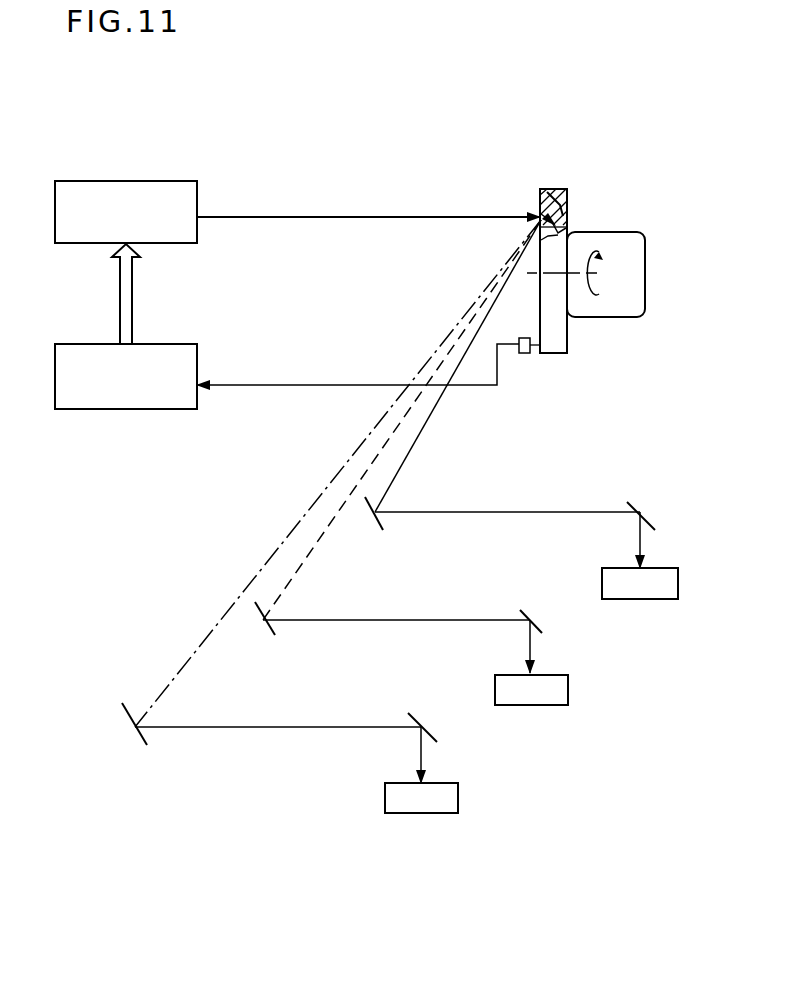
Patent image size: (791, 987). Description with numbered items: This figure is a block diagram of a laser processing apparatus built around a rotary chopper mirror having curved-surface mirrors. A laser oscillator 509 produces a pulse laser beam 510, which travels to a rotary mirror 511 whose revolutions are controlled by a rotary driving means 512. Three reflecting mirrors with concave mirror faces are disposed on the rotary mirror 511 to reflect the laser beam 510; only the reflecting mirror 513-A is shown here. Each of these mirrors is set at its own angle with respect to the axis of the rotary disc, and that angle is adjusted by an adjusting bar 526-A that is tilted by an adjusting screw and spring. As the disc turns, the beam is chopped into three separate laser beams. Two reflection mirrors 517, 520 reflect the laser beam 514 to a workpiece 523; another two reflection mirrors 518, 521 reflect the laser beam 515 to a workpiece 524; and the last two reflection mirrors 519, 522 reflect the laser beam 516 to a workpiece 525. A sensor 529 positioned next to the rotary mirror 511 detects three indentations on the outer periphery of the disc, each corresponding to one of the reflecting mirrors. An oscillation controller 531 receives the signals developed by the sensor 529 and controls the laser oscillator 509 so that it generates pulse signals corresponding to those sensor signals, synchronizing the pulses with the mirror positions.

The laser oscillator 509 is at (157, 182).
The pulse laser beam 510 is at (338, 215).
The rotary mirror 511 is at (568, 194).
The rotary driving means 512 is at (618, 242).
The reflecting mirror 513-A is at (540, 215).
The laser beam 514 is at (432, 413).
The laser beam 515 is at (398, 433).
The laser beam 516 is at (360, 447).
The reflection mirror 517 is at (376, 530).
The reflection mirror 518 is at (264, 637).
The reflection mirror 519 is at (128, 745).
The reflection mirror 520 is at (635, 505).
The reflection mirror 521 is at (527, 612).
The reflection mirror 522 is at (414, 716).
The workpiece 523 is at (660, 600).
The workpiece 524 is at (555, 704).
The workpiece 525 is at (450, 814).
The adjusting bar 526-A is at (548, 188).
The sensor 529 is at (526, 353).
The oscillation controller 531 is at (146, 409).